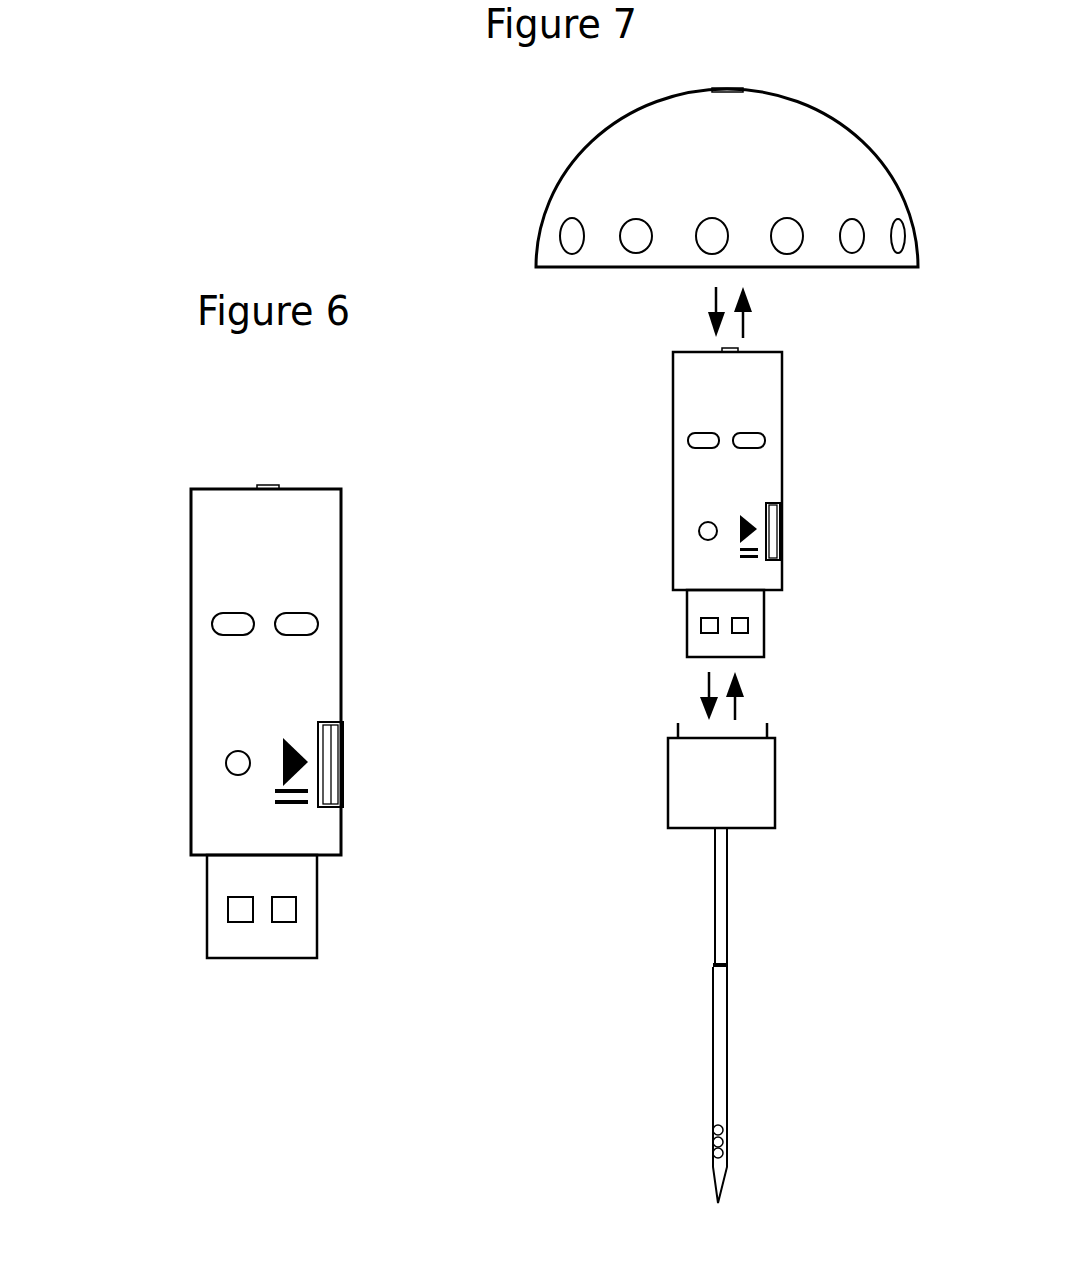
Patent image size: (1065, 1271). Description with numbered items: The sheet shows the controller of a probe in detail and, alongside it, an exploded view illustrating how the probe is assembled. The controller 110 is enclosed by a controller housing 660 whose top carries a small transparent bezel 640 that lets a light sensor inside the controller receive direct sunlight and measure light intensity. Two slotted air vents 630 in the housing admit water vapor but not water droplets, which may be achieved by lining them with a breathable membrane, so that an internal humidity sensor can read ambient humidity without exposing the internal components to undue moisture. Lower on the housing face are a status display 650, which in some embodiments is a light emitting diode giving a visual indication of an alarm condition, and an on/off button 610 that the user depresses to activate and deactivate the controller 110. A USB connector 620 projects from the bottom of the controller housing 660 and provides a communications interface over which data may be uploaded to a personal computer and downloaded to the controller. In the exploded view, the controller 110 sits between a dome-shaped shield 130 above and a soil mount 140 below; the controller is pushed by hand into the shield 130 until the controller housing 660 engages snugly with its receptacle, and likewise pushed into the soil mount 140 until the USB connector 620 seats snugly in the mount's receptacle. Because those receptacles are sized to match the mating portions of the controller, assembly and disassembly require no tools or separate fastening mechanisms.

In FIG. 6, the controller 110 is at (176, 684).
In FIG. 7, the controller 110 is at (663, 418).
In FIG. 7, the shield 130 is at (550, 188).
In FIG. 7, the soil mount 140 is at (745, 919).
In FIG. 6, the on/off button 610 is at (346, 760).
In FIG. 6, the USB connector 620 is at (346, 902).
In FIG. 6, the air vents 630 is at (341, 630).
In FIG. 6, the transparent bezel 640 is at (262, 473).
In FIG. 6, the status display 650 is at (245, 745).
In FIG. 6, the controller housing 660 is at (341, 530).